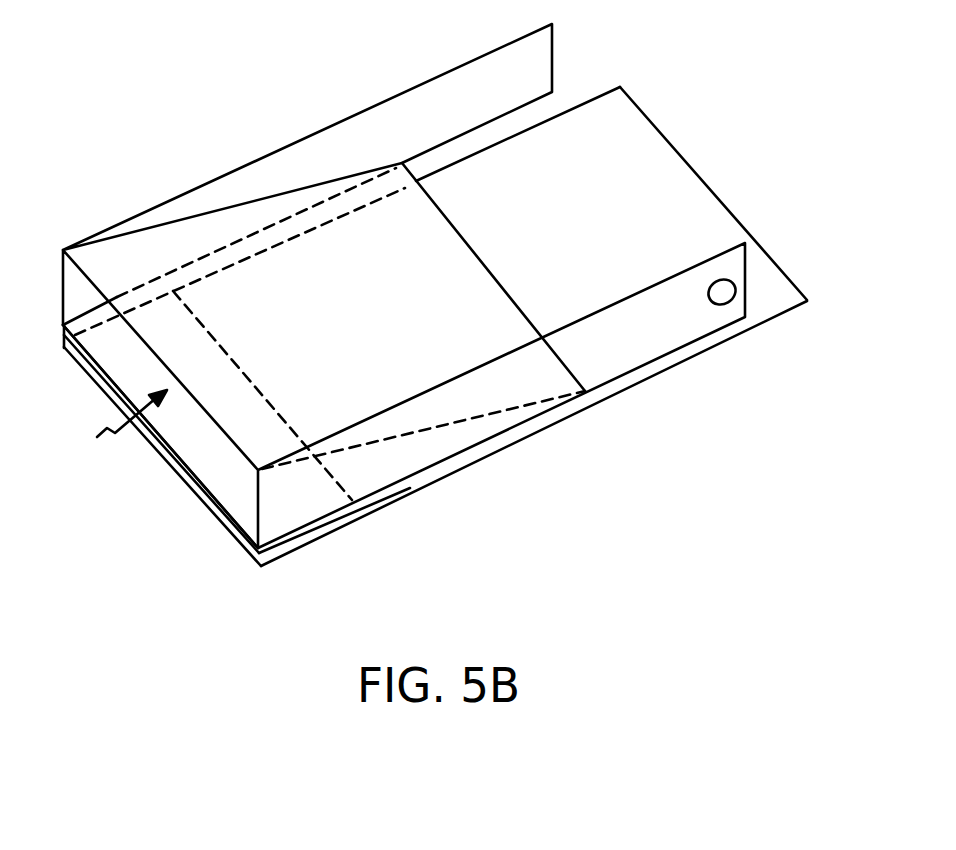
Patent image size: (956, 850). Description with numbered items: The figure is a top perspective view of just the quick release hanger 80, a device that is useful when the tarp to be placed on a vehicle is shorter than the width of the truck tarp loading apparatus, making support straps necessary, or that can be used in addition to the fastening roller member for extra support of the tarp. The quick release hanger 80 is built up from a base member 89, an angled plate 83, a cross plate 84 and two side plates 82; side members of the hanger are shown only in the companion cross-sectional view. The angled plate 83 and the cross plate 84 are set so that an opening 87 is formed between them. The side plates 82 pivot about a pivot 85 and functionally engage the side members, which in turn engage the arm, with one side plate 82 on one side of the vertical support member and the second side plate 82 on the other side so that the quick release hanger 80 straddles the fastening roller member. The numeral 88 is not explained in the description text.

The quick release hanger 80 is at (450, 297).
The side plate 82 is at (373, 126).
The angled plate 83 is at (262, 288).
The cross plate 84 is at (218, 488).
The pivot 85 is at (725, 289).
The opening 87 is at (111, 427).
The end flap 88 is at (541, 56).
The base member 89 is at (411, 490).